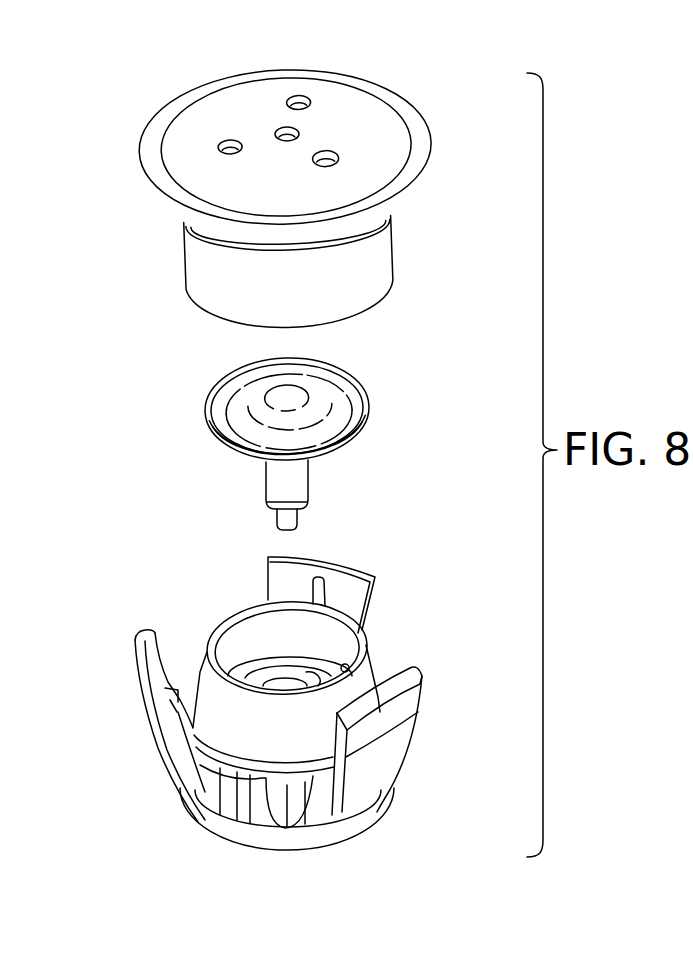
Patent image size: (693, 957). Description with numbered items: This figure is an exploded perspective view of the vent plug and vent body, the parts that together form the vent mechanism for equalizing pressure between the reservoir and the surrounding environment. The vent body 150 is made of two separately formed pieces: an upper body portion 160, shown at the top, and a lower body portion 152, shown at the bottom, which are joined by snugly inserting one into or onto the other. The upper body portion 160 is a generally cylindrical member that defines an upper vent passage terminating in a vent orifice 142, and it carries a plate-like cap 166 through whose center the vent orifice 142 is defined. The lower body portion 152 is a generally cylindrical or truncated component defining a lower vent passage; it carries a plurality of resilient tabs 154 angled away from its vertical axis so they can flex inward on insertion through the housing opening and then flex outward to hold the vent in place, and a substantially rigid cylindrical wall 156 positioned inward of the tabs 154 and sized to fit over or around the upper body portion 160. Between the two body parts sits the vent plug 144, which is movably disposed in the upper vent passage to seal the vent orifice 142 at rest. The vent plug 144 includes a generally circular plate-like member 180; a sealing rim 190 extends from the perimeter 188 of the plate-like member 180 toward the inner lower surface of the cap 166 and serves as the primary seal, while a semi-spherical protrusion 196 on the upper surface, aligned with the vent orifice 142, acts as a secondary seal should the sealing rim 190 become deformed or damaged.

The vent orifice 142 is at (286, 131).
The vent plug 144 is at (310, 427).
The vent body 150 is at (331, 703).
The lower body portion 152 is at (367, 785).
The resilient tabs 154 is at (422, 680).
The cylindrical wall 156 is at (368, 665).
The upper body portion 160 is at (313, 177).
The cap 166 is at (229, 103).
The plate-like member 180 is at (321, 383).
The perimeter 188 is at (356, 488).
The sealing rim 190 is at (206, 421).
The protrusion 196 is at (282, 394).